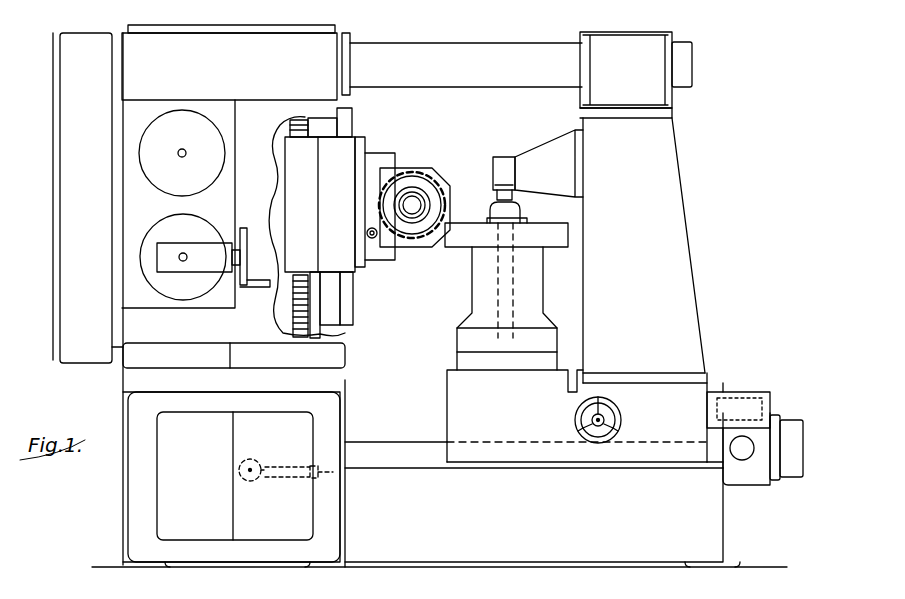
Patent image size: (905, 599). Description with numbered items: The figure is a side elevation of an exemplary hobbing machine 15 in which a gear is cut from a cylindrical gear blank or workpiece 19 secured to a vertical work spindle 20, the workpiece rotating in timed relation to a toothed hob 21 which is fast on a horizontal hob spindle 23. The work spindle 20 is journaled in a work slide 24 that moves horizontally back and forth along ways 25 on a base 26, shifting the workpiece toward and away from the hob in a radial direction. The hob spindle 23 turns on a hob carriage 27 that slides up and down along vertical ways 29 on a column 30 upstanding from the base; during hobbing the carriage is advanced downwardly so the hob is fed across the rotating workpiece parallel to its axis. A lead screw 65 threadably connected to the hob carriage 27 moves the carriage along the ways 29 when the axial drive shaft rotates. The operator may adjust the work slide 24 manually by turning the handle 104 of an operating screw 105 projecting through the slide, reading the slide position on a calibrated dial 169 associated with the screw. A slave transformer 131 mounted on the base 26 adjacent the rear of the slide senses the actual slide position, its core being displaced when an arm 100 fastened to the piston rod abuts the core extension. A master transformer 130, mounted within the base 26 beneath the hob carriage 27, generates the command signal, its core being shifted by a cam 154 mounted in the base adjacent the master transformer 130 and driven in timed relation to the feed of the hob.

The hobbing machine 15 is at (694, 203).
The workpiece 19 is at (457, 240).
The work spindle 20 is at (495, 296).
The hob 21 is at (437, 192).
The hob spindle 23 is at (412, 203).
The work slide 24 is at (462, 394).
The ways 25 is at (405, 450).
The base 26 is at (700, 528).
The hob carriage 27 is at (375, 158).
The vertical ways 29 is at (300, 110).
The column 30 is at (148, 76).
The lead screw 65 is at (300, 275).
The arm 100 is at (785, 418).
The handle 104 is at (622, 426).
The operating screw 105 is at (592, 424).
The master transformer 130 is at (285, 466).
The slave transformer 131 is at (745, 393).
The cam 154 is at (248, 485).
The dial 169 is at (580, 412).